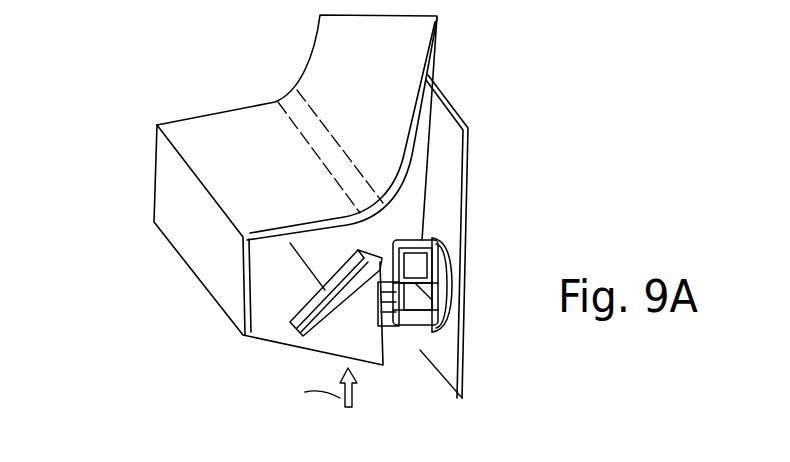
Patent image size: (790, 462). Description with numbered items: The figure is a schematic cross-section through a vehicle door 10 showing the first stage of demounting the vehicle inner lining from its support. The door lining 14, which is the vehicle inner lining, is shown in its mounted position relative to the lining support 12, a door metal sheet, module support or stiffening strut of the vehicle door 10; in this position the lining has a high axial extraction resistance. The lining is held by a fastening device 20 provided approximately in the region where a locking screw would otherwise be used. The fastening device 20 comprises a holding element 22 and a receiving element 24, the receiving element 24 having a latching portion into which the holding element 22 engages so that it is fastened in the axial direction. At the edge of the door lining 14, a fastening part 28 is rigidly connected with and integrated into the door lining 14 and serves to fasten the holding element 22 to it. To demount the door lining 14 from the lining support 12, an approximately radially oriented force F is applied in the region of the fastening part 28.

The vehicle door 10 is at (168, 266).
The lining support 12 is at (455, 158).
The door lining 14 is at (168, 186).
The fastening device 20 is at (474, 273).
The holding element 22 is at (405, 332).
The receiving element 24 is at (456, 314).
The fastening part 28 is at (328, 306).